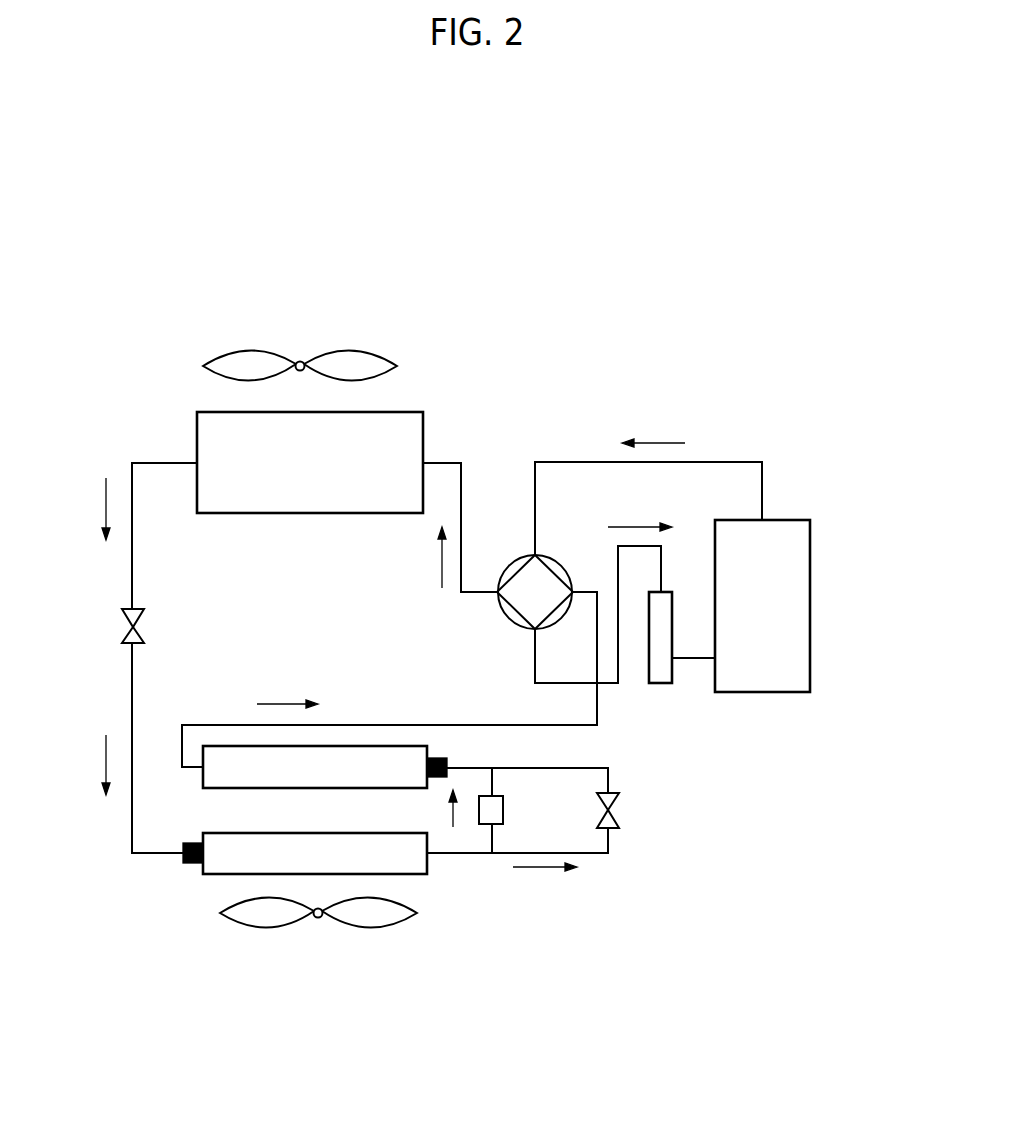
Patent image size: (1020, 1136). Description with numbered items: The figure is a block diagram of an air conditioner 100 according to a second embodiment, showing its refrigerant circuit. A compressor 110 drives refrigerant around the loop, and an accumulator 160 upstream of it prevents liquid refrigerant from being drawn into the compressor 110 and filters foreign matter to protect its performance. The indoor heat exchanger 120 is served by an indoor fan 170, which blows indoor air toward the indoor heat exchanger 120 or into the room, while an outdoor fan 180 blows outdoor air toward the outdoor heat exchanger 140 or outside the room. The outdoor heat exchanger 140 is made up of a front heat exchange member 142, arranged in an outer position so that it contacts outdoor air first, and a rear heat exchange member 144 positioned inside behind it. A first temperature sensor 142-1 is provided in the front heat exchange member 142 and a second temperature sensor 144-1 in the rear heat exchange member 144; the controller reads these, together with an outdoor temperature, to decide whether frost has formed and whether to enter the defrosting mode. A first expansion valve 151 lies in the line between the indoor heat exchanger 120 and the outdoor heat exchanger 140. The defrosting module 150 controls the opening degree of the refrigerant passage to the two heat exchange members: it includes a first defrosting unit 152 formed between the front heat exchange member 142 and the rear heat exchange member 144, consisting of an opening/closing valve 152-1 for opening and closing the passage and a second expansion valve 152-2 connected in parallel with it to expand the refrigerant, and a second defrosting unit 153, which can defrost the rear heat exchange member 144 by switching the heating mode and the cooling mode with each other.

The air conditioner 100 is at (183, 280).
The compressor 110 is at (797, 572).
The indoor heat exchanger 120 is at (397, 427).
The outdoor heat exchanger 140 is at (281, 901).
The front heat exchange member 142 is at (285, 862).
The first temperature sensor 142-1 is at (183, 862).
The rear heat exchange member 144 is at (235, 773).
The second temperature sensor 144-1 is at (440, 778).
The defrosting module 150 is at (580, 892).
The first expansion valve 151 is at (122, 627).
The first defrosting unit 152 is at (523, 892).
The opening/closing valve 152-1 is at (485, 820).
The second expansion valve 152-2 is at (607, 823).
The second defrosting unit 153 is at (508, 611).
The accumulator 160 is at (665, 673).
The indoor fan 170 is at (355, 350).
The outdoor fan 180 is at (382, 926).